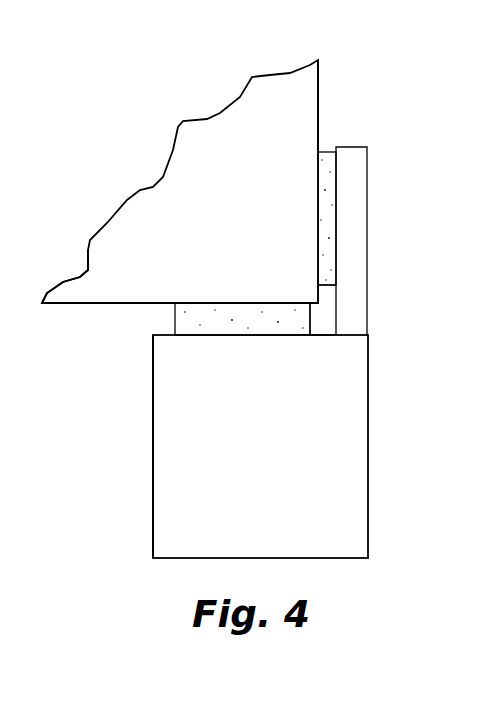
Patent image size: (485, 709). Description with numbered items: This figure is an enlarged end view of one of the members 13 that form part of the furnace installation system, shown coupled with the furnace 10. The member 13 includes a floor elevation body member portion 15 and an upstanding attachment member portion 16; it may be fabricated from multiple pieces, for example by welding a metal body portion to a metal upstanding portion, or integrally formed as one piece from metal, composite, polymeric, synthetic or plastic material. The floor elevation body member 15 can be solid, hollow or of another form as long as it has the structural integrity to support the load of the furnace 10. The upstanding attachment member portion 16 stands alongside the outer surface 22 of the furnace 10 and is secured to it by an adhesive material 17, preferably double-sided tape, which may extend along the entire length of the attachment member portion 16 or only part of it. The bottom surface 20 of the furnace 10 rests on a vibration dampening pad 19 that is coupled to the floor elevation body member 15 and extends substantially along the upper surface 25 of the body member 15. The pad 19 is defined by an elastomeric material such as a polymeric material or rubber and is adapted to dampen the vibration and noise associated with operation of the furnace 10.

The furnace 10 is at (150, 205).
The member 13 is at (352, 485).
The floor elevation body member portion 15 is at (190, 463).
The upstanding attachment member portion 16 is at (355, 218).
The adhesive material 17 is at (328, 152).
The vibration dampening pad 19 is at (177, 320).
The bottom surface 20 is at (90, 305).
The outer surface 22 is at (318, 83).
The upper surface 25 is at (323, 333).